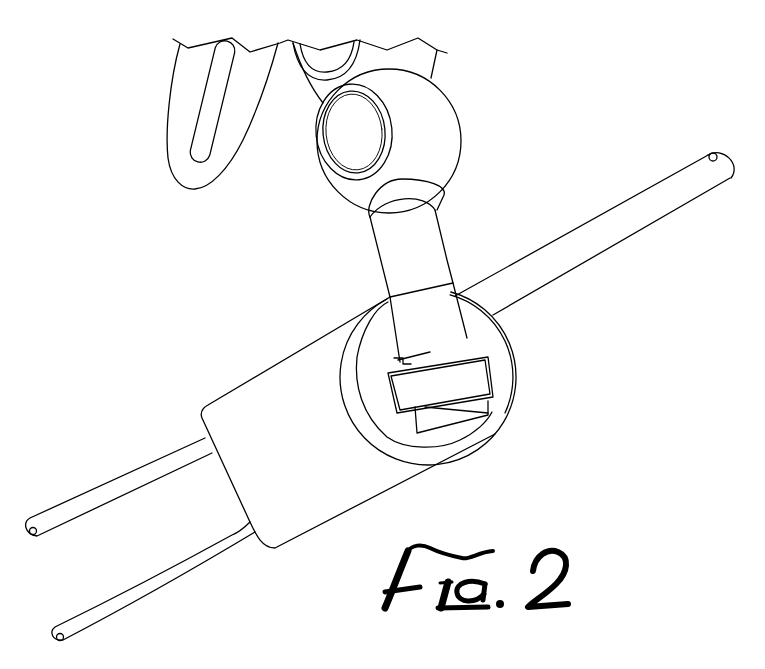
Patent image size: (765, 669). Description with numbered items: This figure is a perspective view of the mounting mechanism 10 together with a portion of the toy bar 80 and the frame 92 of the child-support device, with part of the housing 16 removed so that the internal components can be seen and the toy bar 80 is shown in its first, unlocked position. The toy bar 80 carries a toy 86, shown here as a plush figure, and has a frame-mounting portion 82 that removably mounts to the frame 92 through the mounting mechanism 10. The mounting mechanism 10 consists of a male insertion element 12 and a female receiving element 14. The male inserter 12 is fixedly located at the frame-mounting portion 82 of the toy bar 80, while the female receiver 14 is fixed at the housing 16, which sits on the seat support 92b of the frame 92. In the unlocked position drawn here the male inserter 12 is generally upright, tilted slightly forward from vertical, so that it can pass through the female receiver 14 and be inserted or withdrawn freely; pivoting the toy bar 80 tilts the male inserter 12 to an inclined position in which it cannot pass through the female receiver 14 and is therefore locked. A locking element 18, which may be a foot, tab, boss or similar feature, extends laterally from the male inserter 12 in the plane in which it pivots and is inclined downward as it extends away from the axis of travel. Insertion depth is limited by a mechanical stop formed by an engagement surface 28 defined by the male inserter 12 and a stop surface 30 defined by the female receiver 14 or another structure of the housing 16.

The mounting mechanism 10 is at (316, 405).
The male insertion element 12 is at (473, 335).
The female receiving element 14 is at (502, 387).
The housing 16 is at (439, 468).
The locking element 18 is at (490, 417).
The engagement surface 28 is at (396, 359).
The stop surface 30 is at (392, 370).
The toy bar 80 is at (449, 76).
The frame-mounting portion 82 is at (445, 231).
The toy 86 is at (183, 117).
The frame 92 is at (594, 197).
The seat support 92b is at (630, 224).